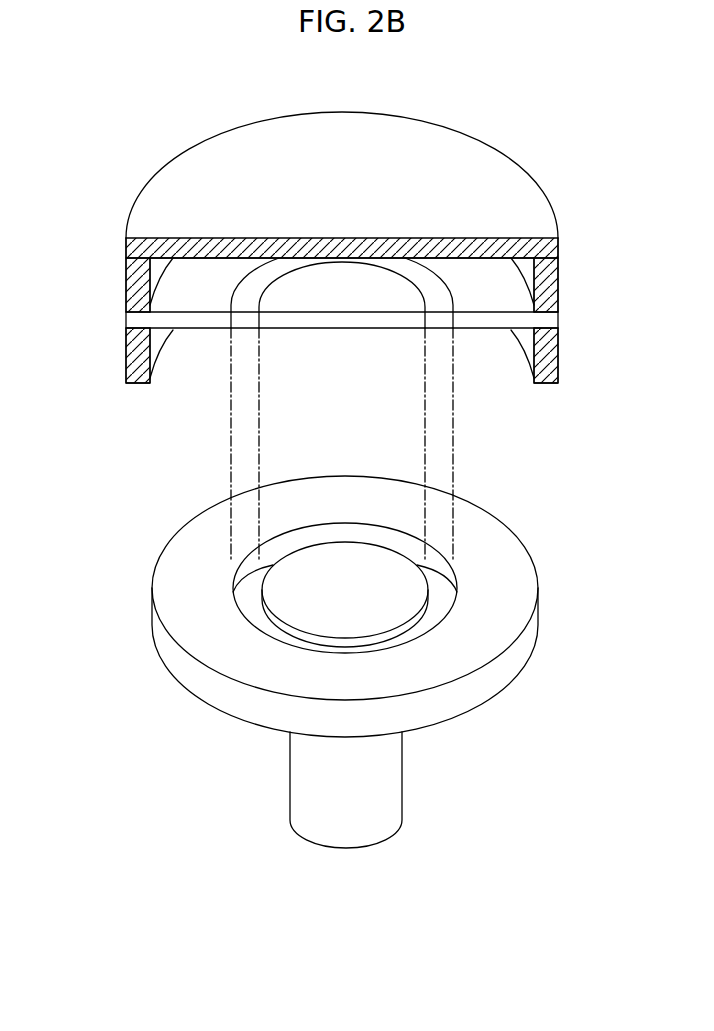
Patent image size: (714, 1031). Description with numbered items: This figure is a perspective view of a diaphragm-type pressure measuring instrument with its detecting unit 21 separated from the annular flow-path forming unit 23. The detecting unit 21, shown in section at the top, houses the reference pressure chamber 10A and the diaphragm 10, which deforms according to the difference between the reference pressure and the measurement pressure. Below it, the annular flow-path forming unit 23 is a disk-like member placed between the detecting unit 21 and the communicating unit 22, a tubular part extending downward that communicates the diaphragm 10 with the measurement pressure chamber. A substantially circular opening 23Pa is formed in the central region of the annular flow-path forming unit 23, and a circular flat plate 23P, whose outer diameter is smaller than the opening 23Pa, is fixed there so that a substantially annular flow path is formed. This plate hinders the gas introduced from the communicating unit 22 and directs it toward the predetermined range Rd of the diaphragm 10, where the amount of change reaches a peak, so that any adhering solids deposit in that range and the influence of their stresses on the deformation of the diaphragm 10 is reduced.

The diaphragm 10 is at (195, 322).
The reference pressure chamber 10A is at (177, 272).
The detecting unit 21 is at (117, 285).
The communicating unit 22 is at (282, 777).
The annular flow-path forming unit 23 is at (497, 678).
The circular flat plate 23P is at (345, 570).
The opening 23Pa is at (446, 577).
The predetermined range Rd is at (243, 277).